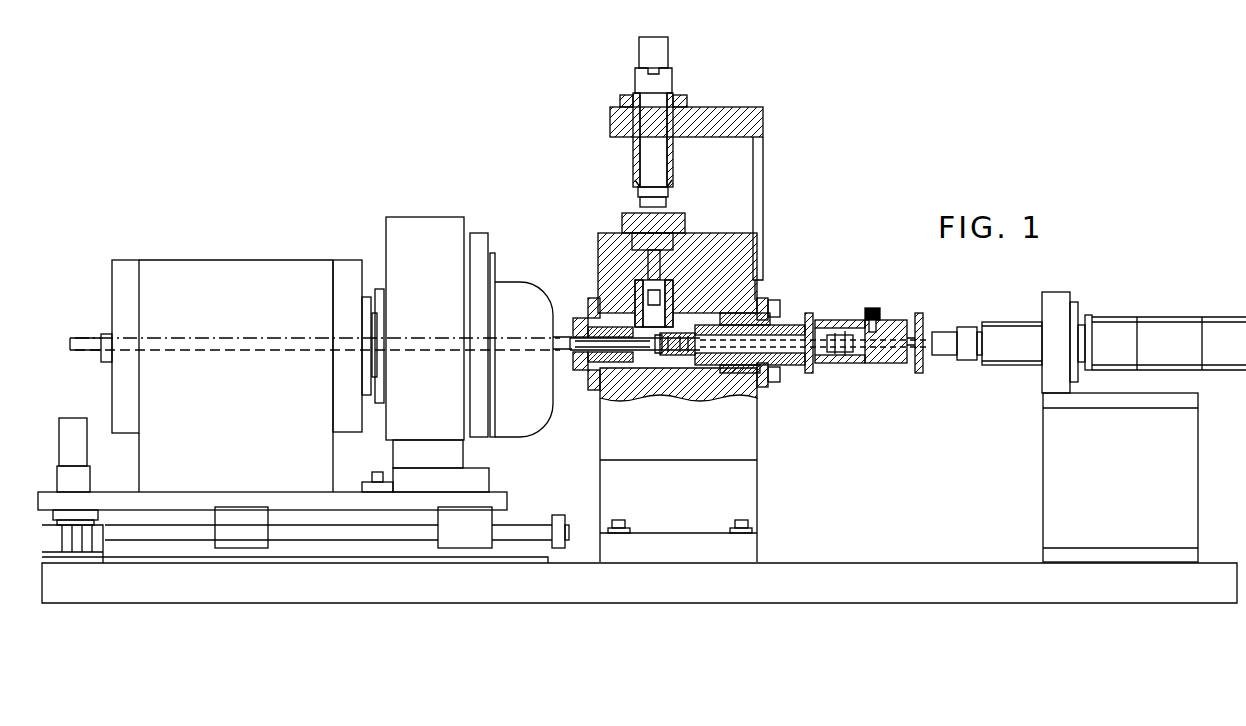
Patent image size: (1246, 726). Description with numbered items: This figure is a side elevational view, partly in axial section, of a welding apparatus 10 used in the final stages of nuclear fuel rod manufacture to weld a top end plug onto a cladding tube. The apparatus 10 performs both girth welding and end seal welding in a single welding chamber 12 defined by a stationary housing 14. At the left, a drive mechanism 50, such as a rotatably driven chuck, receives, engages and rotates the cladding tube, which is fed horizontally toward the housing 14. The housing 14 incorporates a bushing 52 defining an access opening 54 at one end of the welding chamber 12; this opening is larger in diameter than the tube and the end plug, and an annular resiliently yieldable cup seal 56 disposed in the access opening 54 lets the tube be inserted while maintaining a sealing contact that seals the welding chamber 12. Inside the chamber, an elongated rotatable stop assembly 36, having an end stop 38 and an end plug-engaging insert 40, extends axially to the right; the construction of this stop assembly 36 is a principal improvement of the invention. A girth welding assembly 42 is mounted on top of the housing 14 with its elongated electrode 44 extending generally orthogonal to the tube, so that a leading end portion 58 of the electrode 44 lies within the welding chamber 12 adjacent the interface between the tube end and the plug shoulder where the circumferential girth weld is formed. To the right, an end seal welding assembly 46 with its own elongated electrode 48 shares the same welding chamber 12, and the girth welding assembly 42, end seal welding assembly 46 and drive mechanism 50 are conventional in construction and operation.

The welding apparatus 10 is at (821, 139).
The welding chamber 12 is at (648, 355).
The housing 14 is at (760, 498).
The rotatable stop assembly 36 is at (687, 359).
The end stop 38 is at (668, 362).
The end plug-engaging insert 40 is at (653, 358).
The girth welding assembly 42 is at (609, 212).
The elongated electrode 44 is at (673, 280).
The end seal welding assembly 46 is at (894, 369).
The elongated electrode 48 is at (801, 349).
The drive mechanism 50 is at (400, 211).
The bushing 52 is at (617, 362).
The access opening 54 is at (613, 320).
The cup seal 56 is at (582, 370).
The leading end portion 58 is at (657, 330).